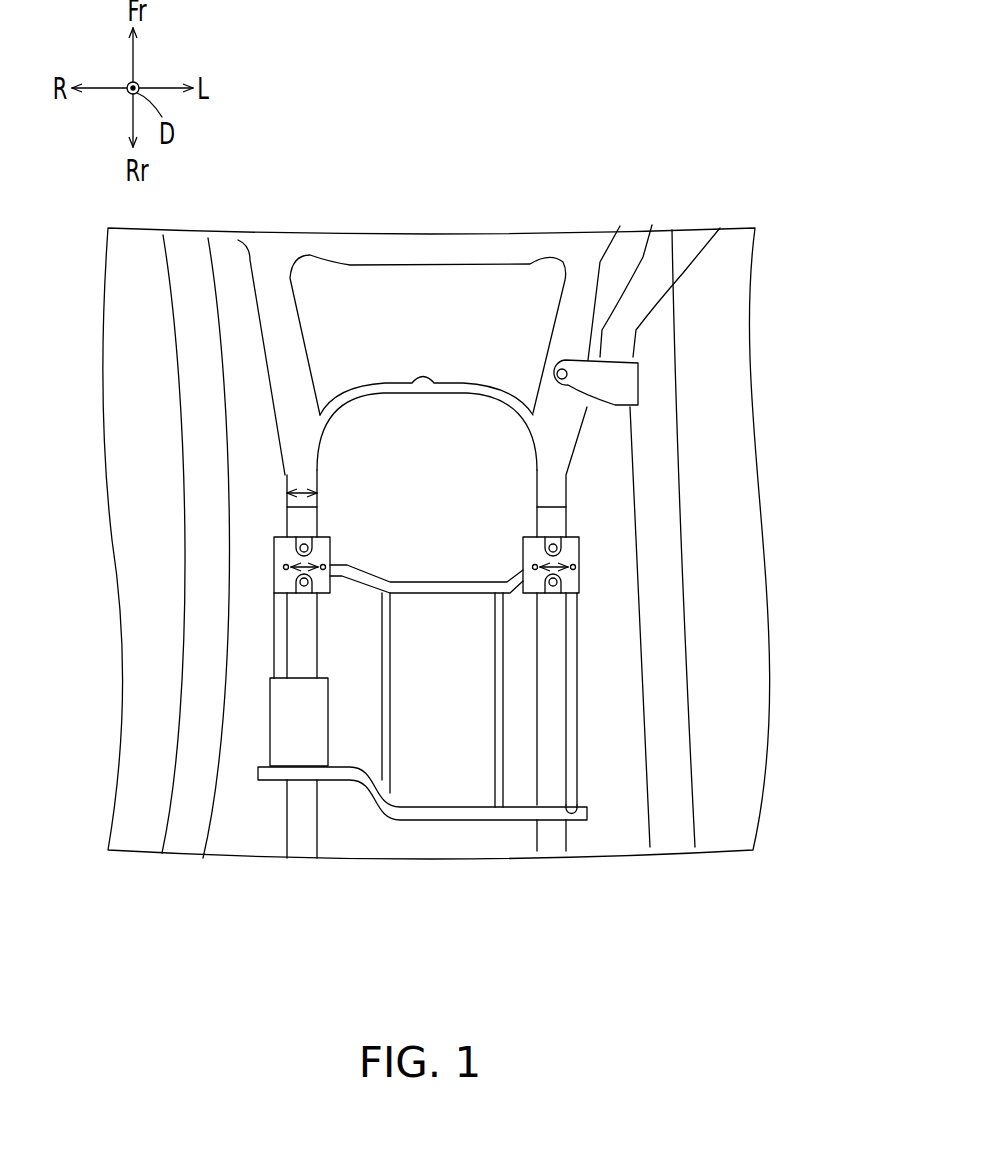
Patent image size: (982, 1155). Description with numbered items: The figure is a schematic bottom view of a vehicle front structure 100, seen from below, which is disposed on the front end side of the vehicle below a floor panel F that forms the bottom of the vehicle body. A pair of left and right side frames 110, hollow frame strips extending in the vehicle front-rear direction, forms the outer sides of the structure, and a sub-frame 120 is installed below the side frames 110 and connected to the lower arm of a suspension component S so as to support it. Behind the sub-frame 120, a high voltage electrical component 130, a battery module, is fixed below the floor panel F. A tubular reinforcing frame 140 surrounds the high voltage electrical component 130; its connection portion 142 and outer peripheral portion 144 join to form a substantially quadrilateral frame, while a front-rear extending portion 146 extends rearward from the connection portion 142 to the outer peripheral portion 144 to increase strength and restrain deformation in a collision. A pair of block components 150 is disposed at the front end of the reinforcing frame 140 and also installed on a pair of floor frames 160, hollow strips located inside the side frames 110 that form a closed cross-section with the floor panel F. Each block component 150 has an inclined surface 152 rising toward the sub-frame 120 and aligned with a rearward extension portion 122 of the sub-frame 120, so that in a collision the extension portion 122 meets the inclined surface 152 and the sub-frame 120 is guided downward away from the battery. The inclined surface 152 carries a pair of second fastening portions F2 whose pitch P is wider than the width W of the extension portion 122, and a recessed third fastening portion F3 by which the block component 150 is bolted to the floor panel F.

The vehicle front structure 100 is at (822, 950).
The side frame 110 is at (203, 468).
The sub-frame 120 is at (432, 245).
The extension portion 122 is at (300, 452).
The high voltage electrical component 130 is at (283, 733).
The reinforcing frame 140 is at (373, 812).
The connection portion 142 is at (442, 581).
The outer peripheral portion 144 is at (272, 648).
The front-rear extending portion 146 is at (391, 766).
The block component 150 is at (266, 594).
The inclined surface 152 is at (276, 585).
The floor frame 160 is at (300, 842).
The suspension component S is at (676, 243).
The floor panel F is at (607, 467).
The second fastening portion F2 is at (281, 566).
The third fastening portion F3 is at (305, 541).
The pitch P is at (290, 562).
The width W is at (303, 490).